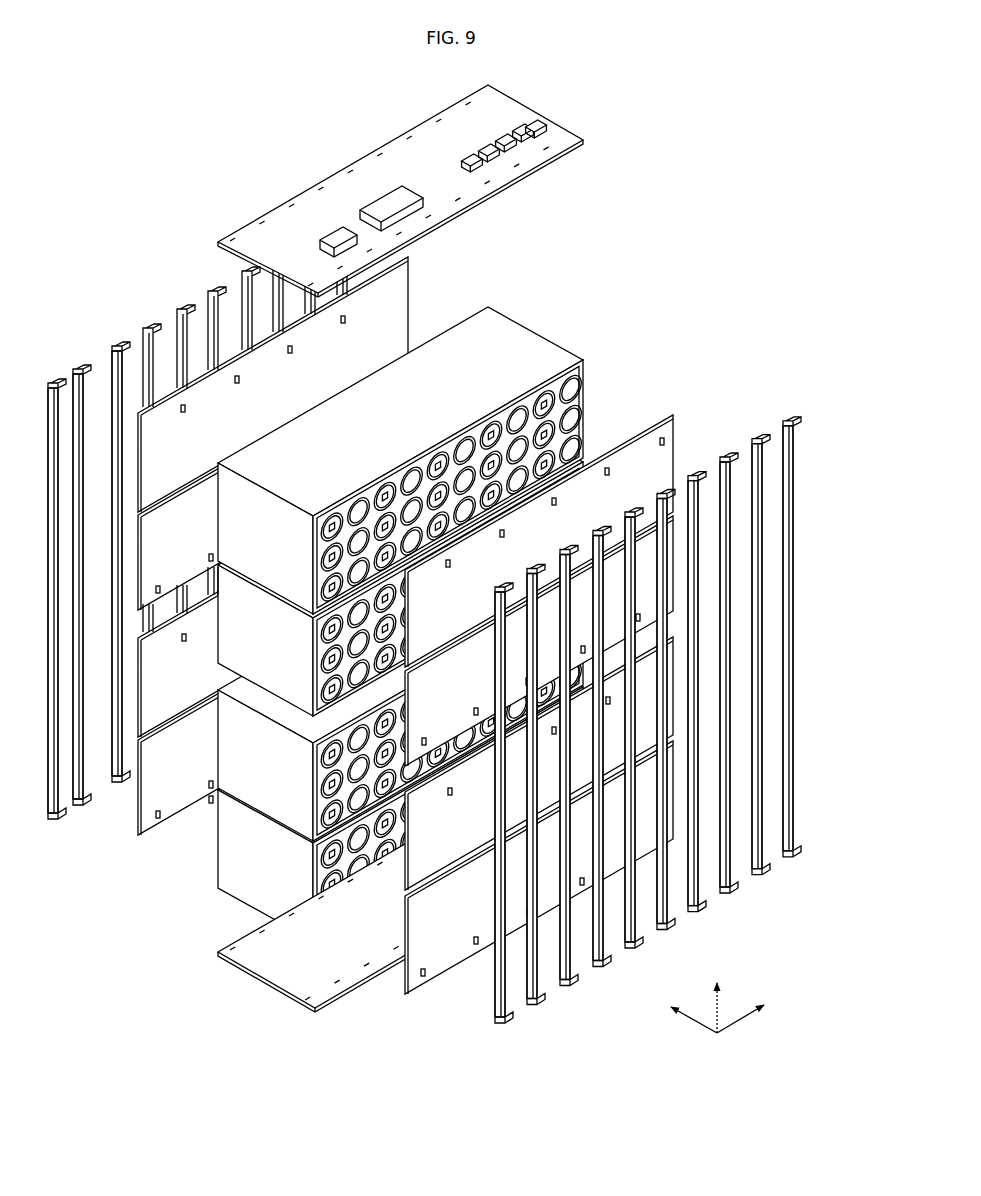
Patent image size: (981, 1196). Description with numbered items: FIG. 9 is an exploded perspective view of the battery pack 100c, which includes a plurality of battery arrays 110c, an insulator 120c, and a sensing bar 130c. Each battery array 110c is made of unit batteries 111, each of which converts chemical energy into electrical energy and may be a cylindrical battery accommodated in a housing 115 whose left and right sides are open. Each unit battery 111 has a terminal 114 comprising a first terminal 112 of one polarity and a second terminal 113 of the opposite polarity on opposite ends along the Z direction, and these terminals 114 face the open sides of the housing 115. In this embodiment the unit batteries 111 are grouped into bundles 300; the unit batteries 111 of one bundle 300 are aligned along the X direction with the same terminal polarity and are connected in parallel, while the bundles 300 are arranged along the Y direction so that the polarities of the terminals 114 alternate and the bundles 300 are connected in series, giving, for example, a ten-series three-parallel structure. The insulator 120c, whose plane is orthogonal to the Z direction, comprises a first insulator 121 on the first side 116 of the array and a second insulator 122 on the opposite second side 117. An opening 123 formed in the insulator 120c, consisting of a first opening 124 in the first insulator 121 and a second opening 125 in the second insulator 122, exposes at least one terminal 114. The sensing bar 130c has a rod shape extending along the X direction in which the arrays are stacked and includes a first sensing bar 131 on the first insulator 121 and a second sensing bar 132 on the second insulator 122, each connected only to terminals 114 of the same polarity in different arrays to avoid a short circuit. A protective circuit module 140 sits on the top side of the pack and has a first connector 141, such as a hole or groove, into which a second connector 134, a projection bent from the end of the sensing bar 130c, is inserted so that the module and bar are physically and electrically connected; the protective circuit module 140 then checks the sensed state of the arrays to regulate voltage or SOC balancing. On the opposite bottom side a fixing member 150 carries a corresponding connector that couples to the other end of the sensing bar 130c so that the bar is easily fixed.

The battery pack 100c is at (151, 95).
The battery array 110c is at (432, 604).
The unit battery 111 is at (590, 364).
The first terminal 112 is at (465, 446).
The second terminal 113 is at (490, 432).
The terminal 114 is at (464, 465).
The housing 115 is at (494, 312).
The first side 116 is at (418, 451).
The second side 117 is at (428, 330).
The insulator 120c is at (290, 546).
The first insulator 121 is at (443, 526).
The second insulator 122 is at (276, 416).
The opening 123 is at (227, 855).
The first opening 124 is at (316, 838).
The second opening 125 is at (211, 800).
The sensing bar 130c is at (360, 621).
The first sensing bar 131 is at (490, 1002).
The second sensing bar 132 is at (77, 824).
The second connector 134 is at (716, 460).
The protective circuit module 140 is at (413, 180).
The first connector 141 is at (521, 168).
The fixing member 150 is at (354, 992).
The bundle 300 is at (326, 507).